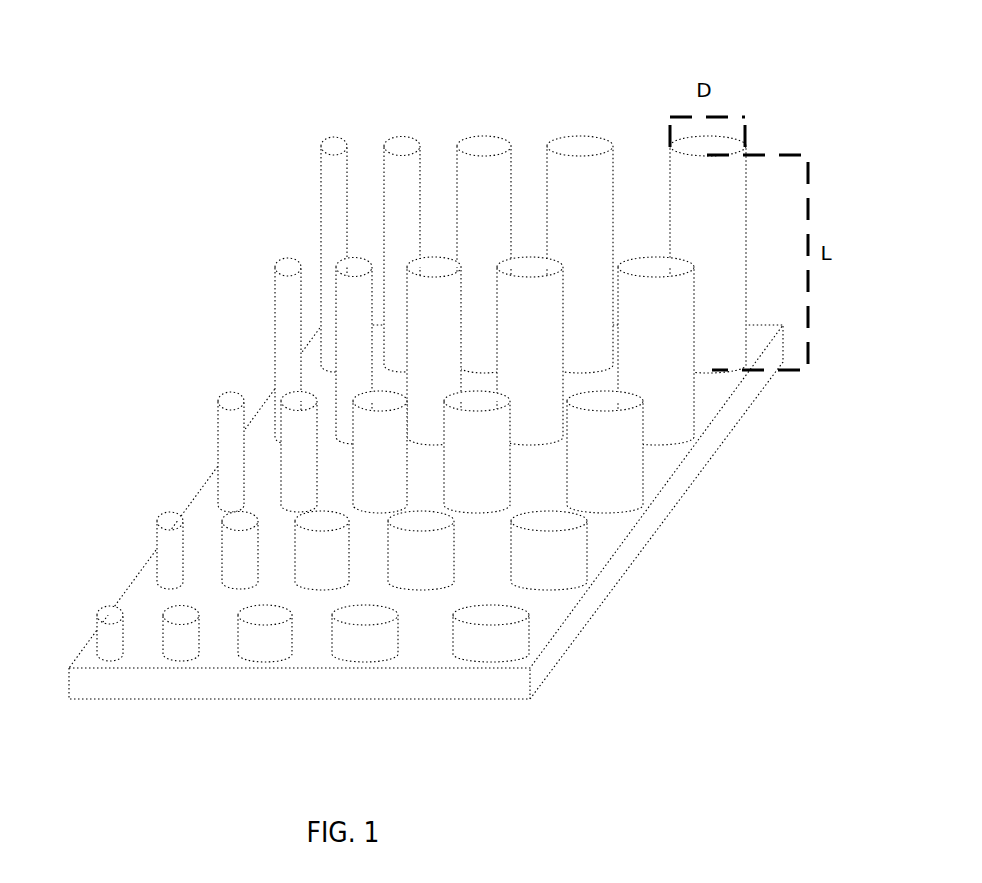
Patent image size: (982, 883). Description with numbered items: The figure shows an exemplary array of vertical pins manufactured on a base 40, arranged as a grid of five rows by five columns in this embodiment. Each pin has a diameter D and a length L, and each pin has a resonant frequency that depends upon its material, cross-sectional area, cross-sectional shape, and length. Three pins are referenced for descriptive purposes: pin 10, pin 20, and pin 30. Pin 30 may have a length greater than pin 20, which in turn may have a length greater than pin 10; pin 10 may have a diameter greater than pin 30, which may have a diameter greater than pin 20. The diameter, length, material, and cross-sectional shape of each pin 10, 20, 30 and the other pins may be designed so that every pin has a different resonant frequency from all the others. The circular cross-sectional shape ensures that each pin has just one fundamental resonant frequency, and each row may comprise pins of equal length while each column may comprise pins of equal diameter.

The pin 10 is at (512, 645).
The pin 20 is at (232, 457).
The pin 30 is at (483, 177).
The base 40 is at (615, 532).